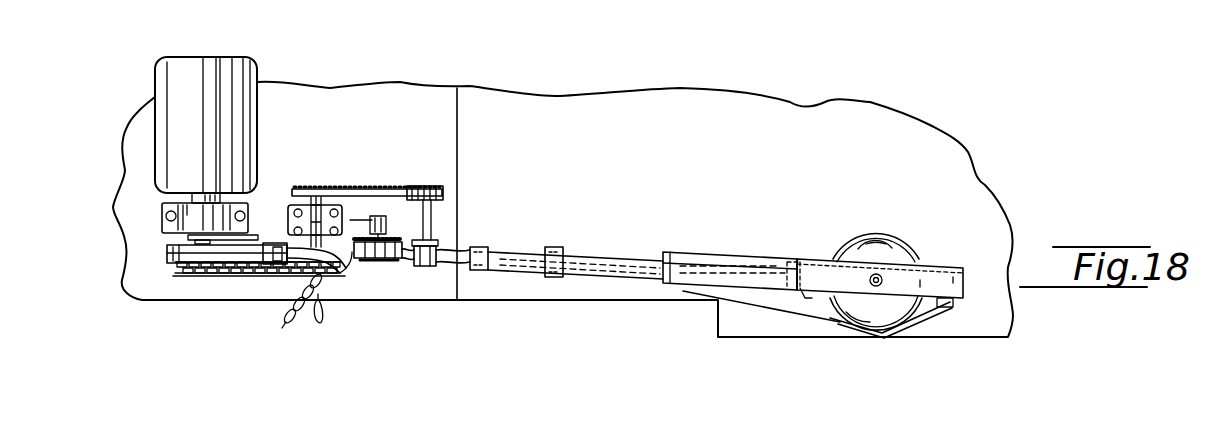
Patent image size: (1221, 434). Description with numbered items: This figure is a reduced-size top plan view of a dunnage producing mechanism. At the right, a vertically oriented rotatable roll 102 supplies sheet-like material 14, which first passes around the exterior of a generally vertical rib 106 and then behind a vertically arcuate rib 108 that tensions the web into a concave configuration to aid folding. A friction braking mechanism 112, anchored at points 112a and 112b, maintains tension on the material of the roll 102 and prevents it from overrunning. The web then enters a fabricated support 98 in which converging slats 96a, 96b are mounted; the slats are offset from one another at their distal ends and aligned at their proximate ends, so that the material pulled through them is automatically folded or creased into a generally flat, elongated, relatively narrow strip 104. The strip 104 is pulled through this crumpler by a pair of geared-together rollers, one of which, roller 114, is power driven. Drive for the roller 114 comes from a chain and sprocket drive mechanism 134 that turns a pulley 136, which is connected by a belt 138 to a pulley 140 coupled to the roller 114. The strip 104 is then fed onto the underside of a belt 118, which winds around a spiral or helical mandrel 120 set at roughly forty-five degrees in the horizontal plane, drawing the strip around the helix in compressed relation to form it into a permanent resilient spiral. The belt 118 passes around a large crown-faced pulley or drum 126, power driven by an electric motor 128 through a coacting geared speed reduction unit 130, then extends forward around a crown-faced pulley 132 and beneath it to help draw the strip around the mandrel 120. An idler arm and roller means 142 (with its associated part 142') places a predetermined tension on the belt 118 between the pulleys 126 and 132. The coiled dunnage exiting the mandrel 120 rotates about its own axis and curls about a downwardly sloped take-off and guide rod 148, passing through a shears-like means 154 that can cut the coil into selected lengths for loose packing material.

The electric motor 128 is at (228, 78).
The geared speed reduction unit 130 is at (163, 210).
The crown-faced pulley or drum 126 is at (172, 250).
The idler arm and roller means 142 is at (269, 236).
The slide block insert 142' is at (284, 207).
The belt 118 is at (250, 268).
The chain and sprocket drive mechanism 134 is at (212, 278).
The pulley 136 is at (312, 190).
The belt 138 is at (366, 190).
The pulley 140 is at (414, 188).
The spiral or helical mandrel 120 is at (350, 273).
The crown-faced pulley 132 is at (382, 262).
The coacting roller 114 is at (425, 268).
The elongated narrow strip of material 104 is at (457, 275).
The take-off and guide rod 148 is at (278, 325).
The shears-like means 154 is at (322, 310).
The sheet-like material 14 is at (300, 320).
The fabricated support 98 is at (478, 248).
The converging slat 96a is at (586, 262).
The converging slat 96b is at (621, 270).
The anchor of friction braking mechanism 112b is at (700, 291).
The generally vertical rib 106 is at (812, 300).
The vertically arcuate rib 108 is at (793, 291).
The rotatable roll 102 is at (900, 244).
The friction braking mechanism 112 is at (882, 334).
The anchor of friction braking mechanism 112a is at (953, 307).